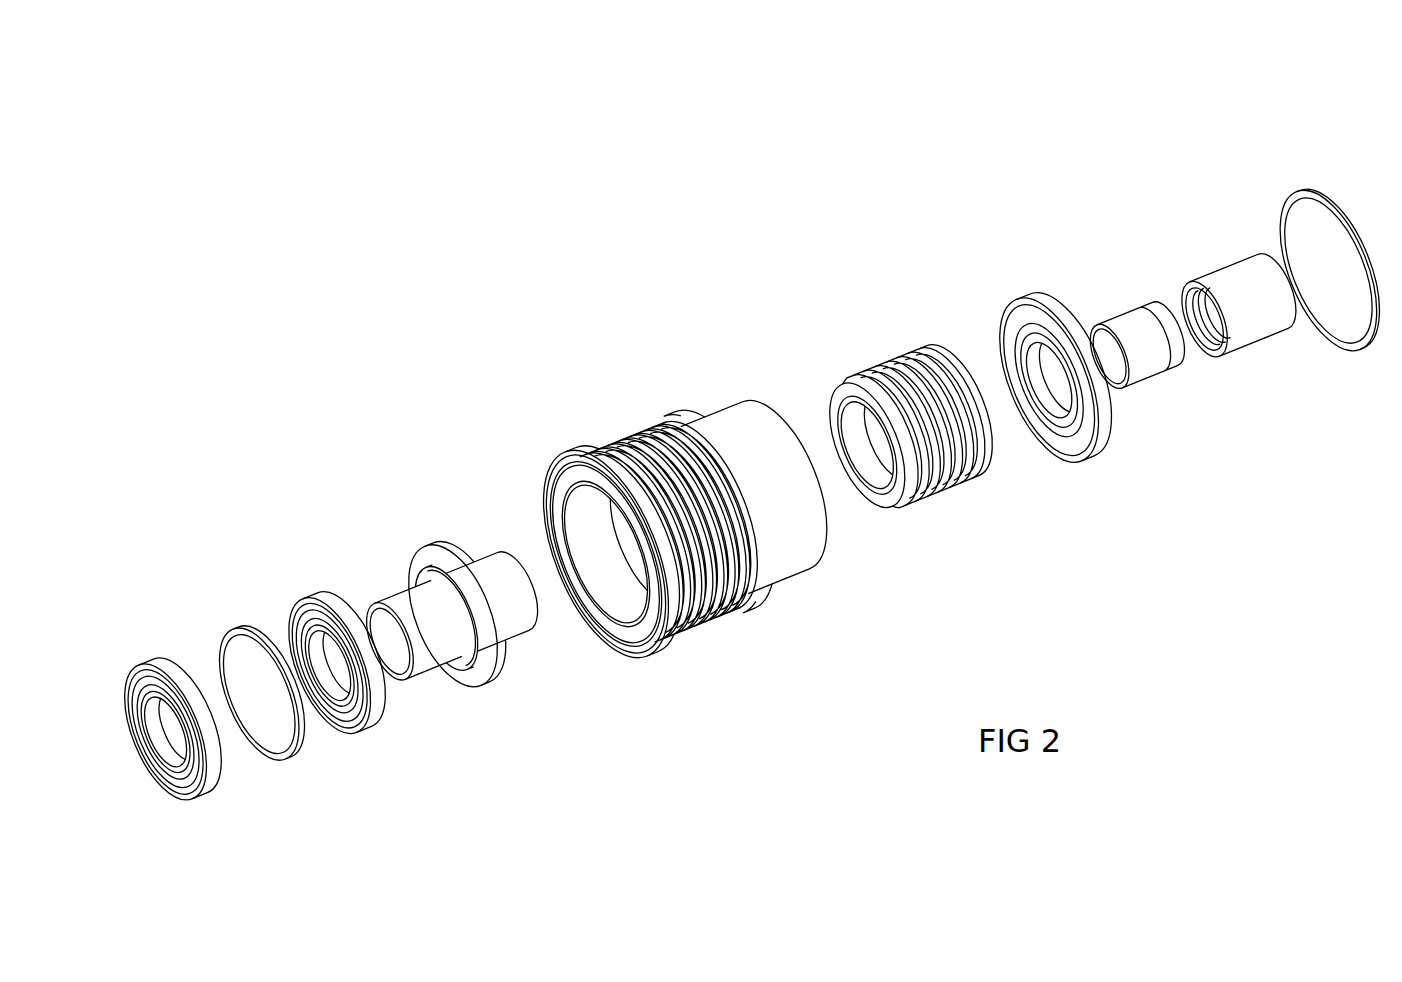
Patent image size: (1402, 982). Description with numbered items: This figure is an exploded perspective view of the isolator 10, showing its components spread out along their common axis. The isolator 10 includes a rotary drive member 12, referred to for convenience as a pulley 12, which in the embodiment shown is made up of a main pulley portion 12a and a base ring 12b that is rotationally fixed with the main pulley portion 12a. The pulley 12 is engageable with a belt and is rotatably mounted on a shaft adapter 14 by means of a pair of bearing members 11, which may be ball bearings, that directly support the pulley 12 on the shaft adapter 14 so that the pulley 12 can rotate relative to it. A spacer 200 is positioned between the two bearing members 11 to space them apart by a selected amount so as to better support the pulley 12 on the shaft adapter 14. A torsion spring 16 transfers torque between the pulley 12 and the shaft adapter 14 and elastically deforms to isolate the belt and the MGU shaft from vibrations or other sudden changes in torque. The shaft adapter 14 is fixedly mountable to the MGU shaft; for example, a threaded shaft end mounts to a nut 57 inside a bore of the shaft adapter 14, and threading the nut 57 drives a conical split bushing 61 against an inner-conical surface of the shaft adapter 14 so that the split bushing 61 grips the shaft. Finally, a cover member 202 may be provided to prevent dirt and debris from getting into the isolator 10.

The isolator 10 is at (256, 209).
The bearing members 11 is at (165, 662).
The spacer 200 is at (237, 623).
The shaft adapter 14 is at (447, 547).
The rotary drive member 12 is at (705, 152).
The main pulley portion 12a is at (627, 440).
The base ring 12b is at (1020, 307).
The torsion spring 16 is at (882, 380).
The conical split bushing 61 is at (1142, 310).
The nut 57 is at (1243, 302).
The cover member 202 is at (1303, 207).